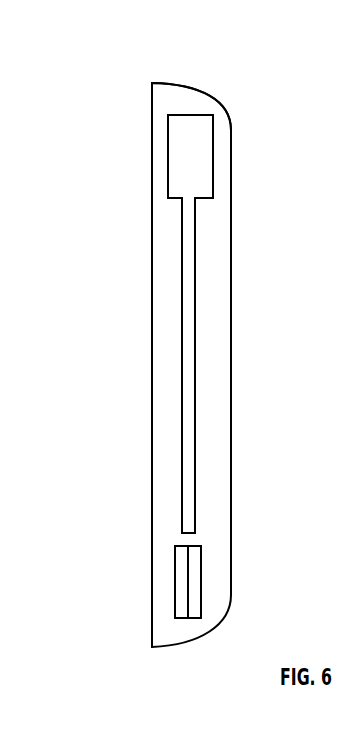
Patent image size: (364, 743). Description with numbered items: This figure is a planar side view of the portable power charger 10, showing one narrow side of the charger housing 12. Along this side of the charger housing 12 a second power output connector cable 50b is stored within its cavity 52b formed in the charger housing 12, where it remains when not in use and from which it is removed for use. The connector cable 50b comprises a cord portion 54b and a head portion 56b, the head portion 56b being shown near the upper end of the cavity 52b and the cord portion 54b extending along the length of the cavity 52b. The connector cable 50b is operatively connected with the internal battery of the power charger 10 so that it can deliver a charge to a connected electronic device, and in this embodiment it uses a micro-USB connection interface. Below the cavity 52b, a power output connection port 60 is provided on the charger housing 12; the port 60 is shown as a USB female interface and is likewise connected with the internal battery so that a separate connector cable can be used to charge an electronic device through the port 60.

The portable power charger 10 is at (118, 163).
The charger housing 12 is at (231, 215).
The second power output connector cable 50b is at (182, 292).
The cavity 52b is at (185, 102).
The cord portion 54b is at (188, 405).
The head portion 56b is at (187, 139).
The power output connection port 60 is at (173, 603).